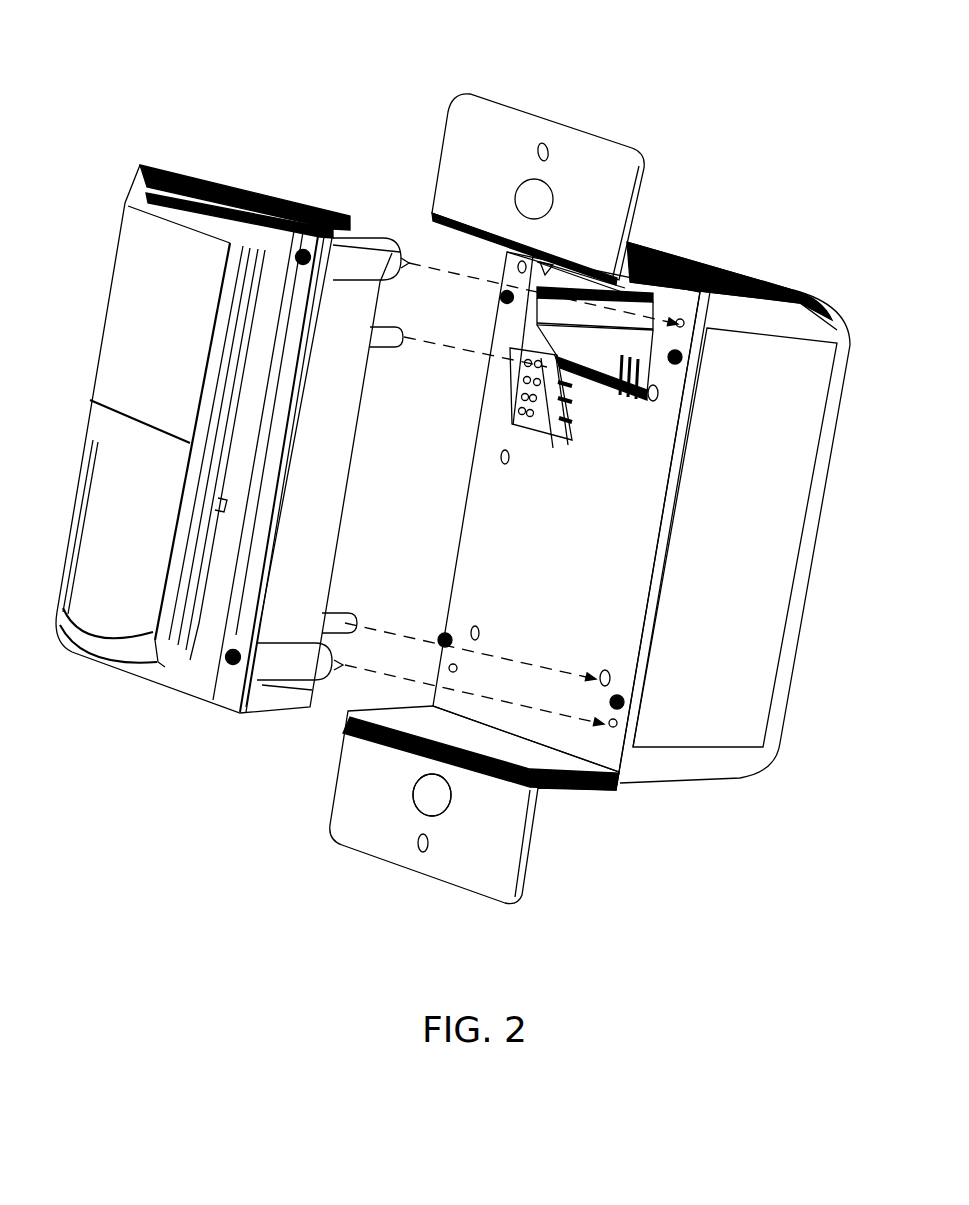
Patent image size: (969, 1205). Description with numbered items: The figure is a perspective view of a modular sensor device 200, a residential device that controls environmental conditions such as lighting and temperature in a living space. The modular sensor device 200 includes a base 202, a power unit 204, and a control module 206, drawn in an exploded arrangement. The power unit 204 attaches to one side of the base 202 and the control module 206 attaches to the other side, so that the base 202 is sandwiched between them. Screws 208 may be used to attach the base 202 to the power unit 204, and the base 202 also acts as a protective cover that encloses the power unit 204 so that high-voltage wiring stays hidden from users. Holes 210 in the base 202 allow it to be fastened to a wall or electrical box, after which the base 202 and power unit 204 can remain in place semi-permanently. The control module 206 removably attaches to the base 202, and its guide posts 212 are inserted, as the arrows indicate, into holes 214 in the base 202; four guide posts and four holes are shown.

The modular sensor device 200 is at (497, 967).
The base 202 is at (527, 106).
The power unit 204 is at (730, 268).
The control module 206 is at (270, 190).
The screws 208 is at (683, 358).
The holes 210 is at (543, 193).
The guide posts 212 is at (396, 348).
The holes 214 is at (660, 397).